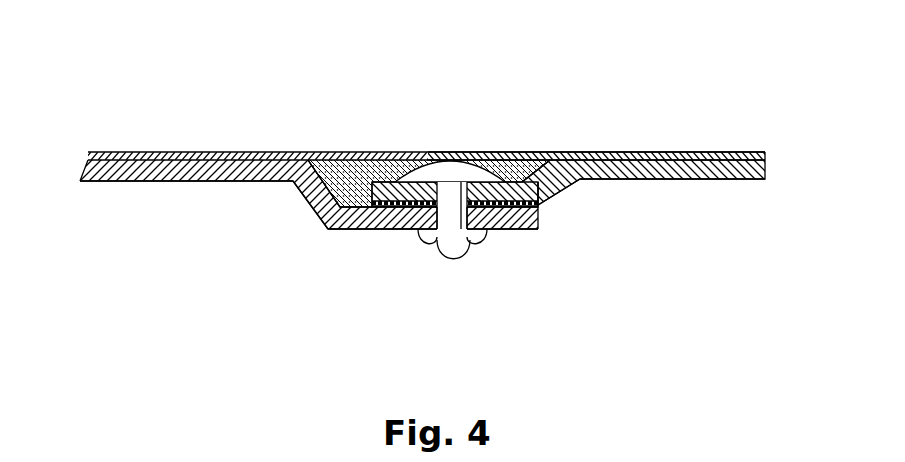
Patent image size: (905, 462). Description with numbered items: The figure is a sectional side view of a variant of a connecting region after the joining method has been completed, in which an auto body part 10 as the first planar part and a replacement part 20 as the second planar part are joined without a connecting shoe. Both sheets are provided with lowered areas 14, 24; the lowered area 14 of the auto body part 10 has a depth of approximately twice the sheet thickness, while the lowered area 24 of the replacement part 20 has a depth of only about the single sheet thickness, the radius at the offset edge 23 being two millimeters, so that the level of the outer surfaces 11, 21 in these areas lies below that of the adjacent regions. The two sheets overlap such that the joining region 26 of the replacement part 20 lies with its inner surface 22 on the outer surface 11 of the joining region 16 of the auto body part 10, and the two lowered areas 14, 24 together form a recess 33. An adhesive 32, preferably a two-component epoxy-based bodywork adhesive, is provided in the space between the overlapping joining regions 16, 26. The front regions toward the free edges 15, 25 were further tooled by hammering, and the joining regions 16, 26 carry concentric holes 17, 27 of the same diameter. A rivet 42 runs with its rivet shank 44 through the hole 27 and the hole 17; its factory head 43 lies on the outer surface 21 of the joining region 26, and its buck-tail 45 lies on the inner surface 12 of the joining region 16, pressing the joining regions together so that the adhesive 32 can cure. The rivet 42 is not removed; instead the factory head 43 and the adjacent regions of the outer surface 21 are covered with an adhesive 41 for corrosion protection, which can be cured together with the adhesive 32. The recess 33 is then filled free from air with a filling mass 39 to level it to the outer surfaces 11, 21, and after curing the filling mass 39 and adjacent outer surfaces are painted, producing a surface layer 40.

The auto body part 10 is at (143, 186).
The outer surface 11 is at (160, 152).
The inner surface 12 is at (203, 183).
The lowered area 14 is at (318, 214).
The free edge 15 is at (336, 153).
The joining region 16 is at (358, 229).
The hole 17 is at (420, 246).
The replacement part 20 is at (737, 184).
The outer surface 21 is at (708, 152).
The inner surface 22 is at (683, 179).
The offset edge 23 is at (552, 153).
The lowered area 24 is at (404, 152).
The free edge 25 is at (542, 229).
The joining region 26 is at (525, 152).
The hole 27 is at (495, 231).
The adhesive 32 is at (540, 207).
The recess 33 is at (366, 153).
The filling mass 39 is at (383, 152).
The surface layer 40 is at (537, 152).
The adhesive 41 is at (450, 152).
The rivet 42 is at (440, 250).
The factory head 43 is at (474, 152).
The rivet shank 44 is at (452, 245).
The buck-tail 45 is at (468, 242).